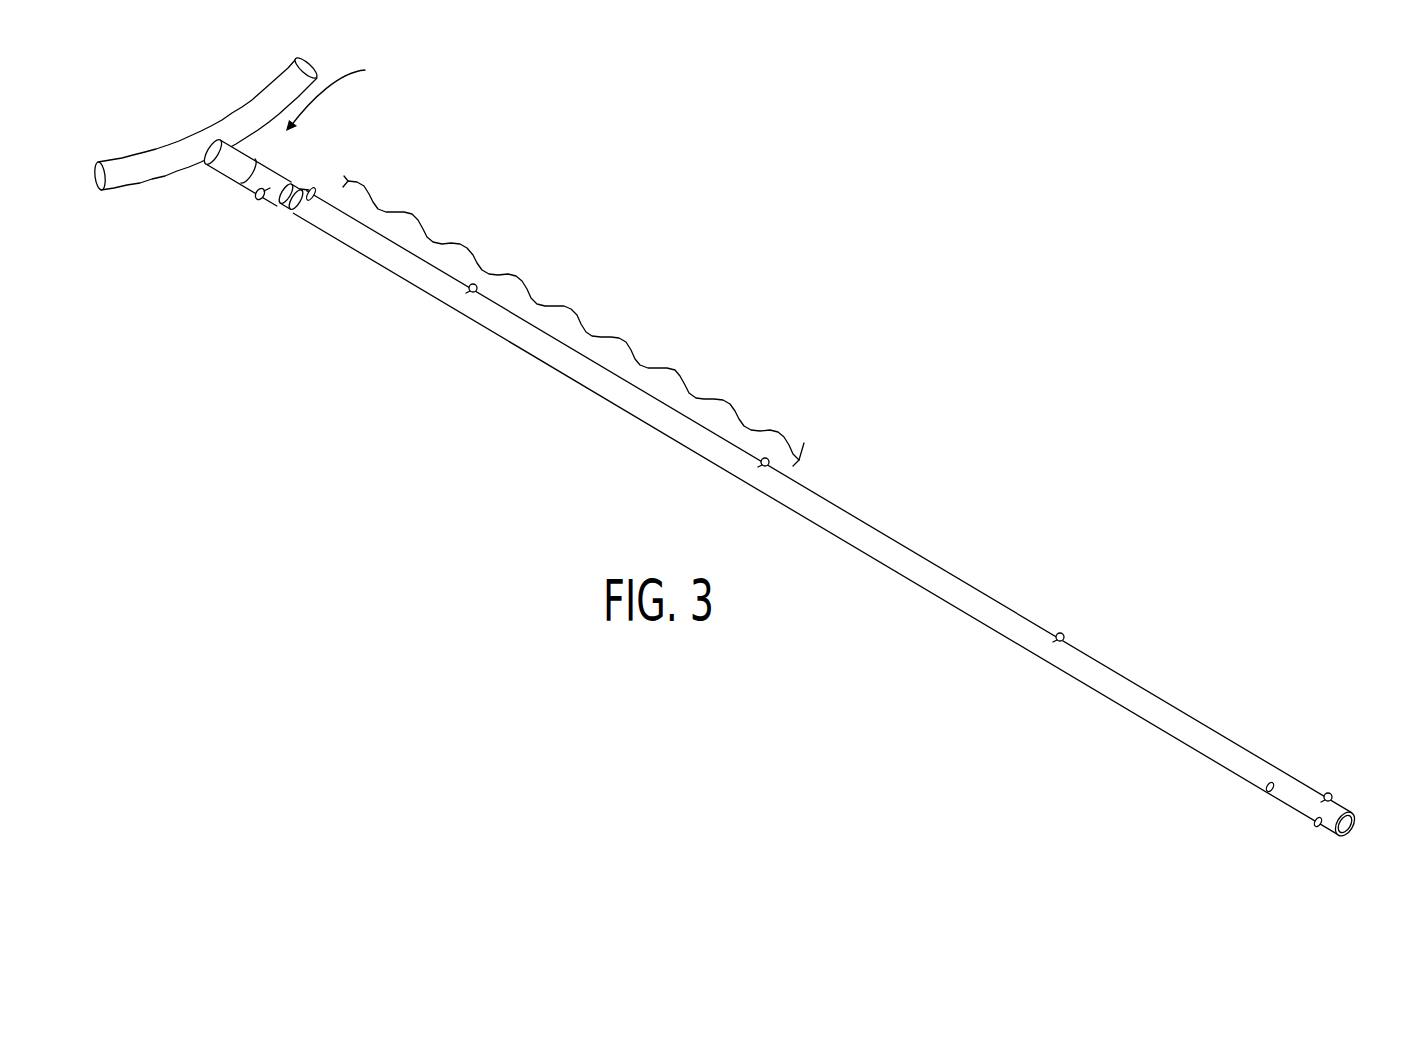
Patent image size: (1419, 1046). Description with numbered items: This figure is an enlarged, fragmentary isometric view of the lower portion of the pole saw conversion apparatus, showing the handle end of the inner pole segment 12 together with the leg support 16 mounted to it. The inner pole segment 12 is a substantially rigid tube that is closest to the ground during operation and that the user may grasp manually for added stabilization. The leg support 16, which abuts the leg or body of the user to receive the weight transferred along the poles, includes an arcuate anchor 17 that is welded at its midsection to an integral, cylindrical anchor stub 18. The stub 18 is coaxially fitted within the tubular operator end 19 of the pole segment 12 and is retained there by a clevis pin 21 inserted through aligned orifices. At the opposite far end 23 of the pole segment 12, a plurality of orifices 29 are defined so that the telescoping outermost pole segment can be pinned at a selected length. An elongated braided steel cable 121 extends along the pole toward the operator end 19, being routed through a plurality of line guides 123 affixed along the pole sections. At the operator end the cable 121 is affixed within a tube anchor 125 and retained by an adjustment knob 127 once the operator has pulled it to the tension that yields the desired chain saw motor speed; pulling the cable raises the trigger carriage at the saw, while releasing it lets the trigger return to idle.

The inner pole segment 12 is at (825, 530).
The leg support 16 is at (150, 191).
The arcuate anchor 17 is at (256, 112).
The anchor stub 18 is at (281, 134).
The operator end 19 is at (343, 93).
The clevis pin 21 is at (294, 180).
The far end 23 is at (1330, 826).
The orifices 29 is at (1315, 822).
The cable 121 is at (540, 302).
The line guides 123 is at (764, 468).
The tube anchor 125 is at (313, 187).
The adjustment knob 127 is at (288, 205).